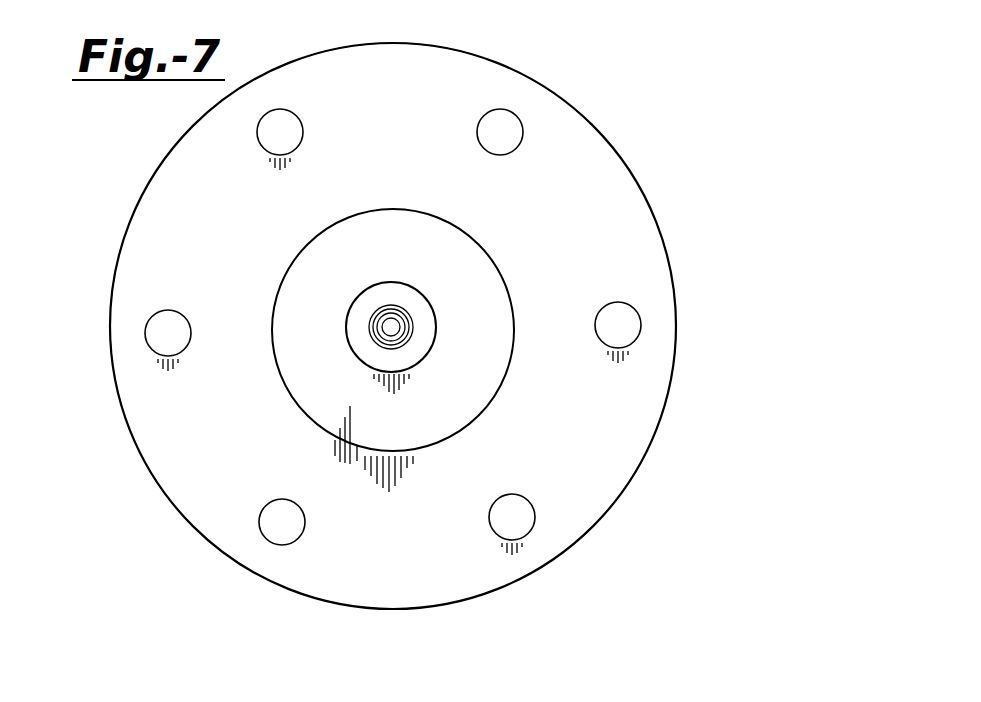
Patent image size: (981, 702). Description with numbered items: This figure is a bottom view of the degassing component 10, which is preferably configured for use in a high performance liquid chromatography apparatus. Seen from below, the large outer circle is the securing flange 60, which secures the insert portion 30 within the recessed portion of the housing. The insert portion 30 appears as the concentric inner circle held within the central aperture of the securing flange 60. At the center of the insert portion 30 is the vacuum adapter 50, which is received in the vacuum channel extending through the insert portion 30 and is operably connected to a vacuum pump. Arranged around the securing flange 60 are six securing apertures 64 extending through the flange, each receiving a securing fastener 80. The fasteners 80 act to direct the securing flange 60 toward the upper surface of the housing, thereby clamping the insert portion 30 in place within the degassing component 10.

The degassing component 10 is at (664, 497).
The insert portion 30 is at (533, 363).
The vacuum adapter 50 is at (388, 284).
The securing flange 60 is at (682, 334).
The securing apertures 64 is at (516, 106).
The securing fasteners 80 is at (490, 127).